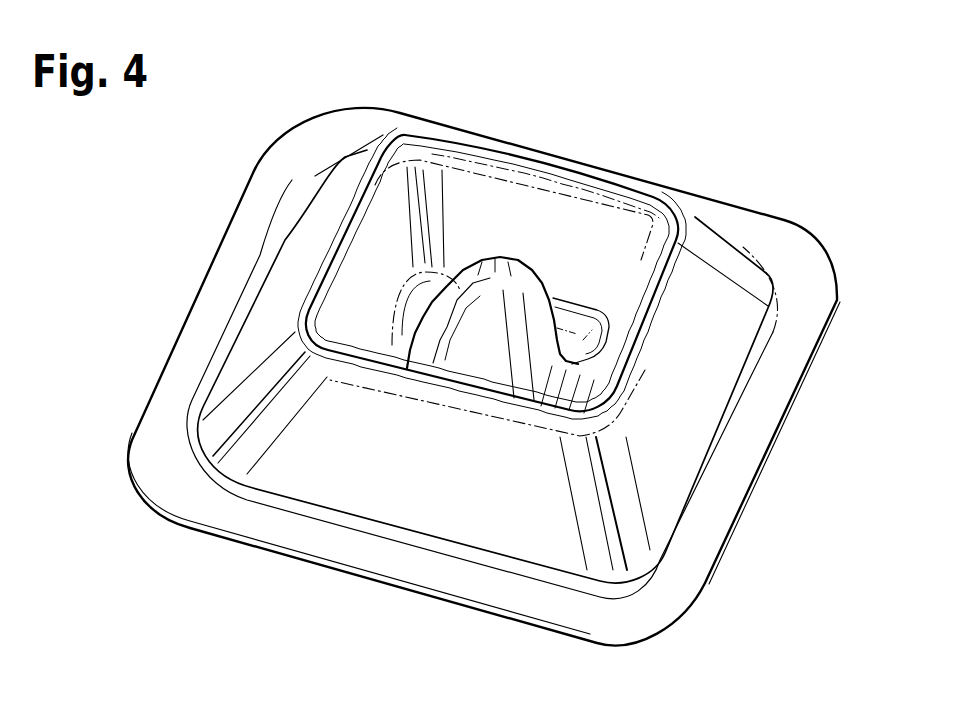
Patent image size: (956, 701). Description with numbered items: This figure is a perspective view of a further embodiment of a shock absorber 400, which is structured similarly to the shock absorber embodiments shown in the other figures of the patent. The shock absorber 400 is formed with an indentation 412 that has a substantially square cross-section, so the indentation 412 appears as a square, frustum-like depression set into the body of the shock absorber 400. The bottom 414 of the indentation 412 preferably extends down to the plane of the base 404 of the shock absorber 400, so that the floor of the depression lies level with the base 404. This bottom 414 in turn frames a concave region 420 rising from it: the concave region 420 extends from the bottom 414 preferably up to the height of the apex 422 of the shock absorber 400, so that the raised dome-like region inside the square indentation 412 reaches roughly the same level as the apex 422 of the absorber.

The shock absorber 400 is at (791, 200).
The base 404 is at (310, 561).
The indentation 412 is at (583, 258).
The bottom 414 is at (413, 328).
The concave region 420 is at (496, 258).
The apex 422 is at (318, 297).